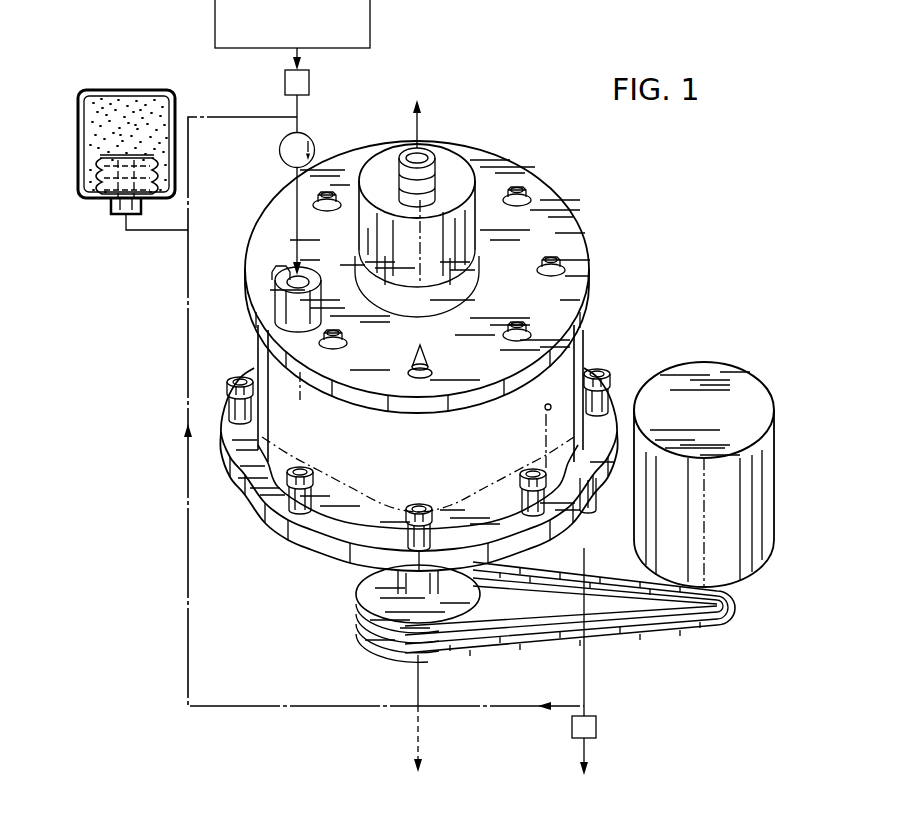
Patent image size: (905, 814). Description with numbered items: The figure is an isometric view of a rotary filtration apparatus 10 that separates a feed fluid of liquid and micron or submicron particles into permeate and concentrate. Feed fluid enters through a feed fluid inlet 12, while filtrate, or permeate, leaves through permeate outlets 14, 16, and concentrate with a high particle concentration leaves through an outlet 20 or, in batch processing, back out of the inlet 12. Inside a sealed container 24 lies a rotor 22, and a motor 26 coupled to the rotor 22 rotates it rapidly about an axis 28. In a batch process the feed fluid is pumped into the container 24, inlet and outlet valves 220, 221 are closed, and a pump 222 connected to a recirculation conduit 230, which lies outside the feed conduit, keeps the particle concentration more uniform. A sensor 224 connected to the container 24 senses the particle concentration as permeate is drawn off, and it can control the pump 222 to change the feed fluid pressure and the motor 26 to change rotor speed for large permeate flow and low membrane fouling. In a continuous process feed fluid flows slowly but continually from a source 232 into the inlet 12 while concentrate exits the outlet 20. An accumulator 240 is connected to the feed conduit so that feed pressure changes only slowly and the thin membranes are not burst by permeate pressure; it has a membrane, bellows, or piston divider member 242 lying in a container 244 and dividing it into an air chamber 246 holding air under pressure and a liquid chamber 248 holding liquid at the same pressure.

The rotary filtration apparatus 10 is at (474, 377).
The feed fluid inlet 12 is at (274, 281).
The permeate outlet 14 is at (437, 165).
The permeate outlet 16 is at (403, 672).
The outlet 20 is at (598, 492).
The rotor 22 is at (250, 432).
The sealed container 24 is at (243, 355).
The motor 26 is at (772, 418).
The axis 28 is at (420, 712).
The inlet valve 220 is at (310, 82).
The outlet valve 221 is at (596, 724).
The pump 222 is at (311, 139).
The sensor 224 is at (547, 400).
The recirculation conduit 230 is at (186, 497).
The source 232 is at (370, 27).
The accumulator 240 is at (102, 132).
The divider member 242 is at (110, 153).
The container 244 is at (80, 175).
The air chamber 246 is at (107, 107).
The liquid chamber 248 is at (120, 173).